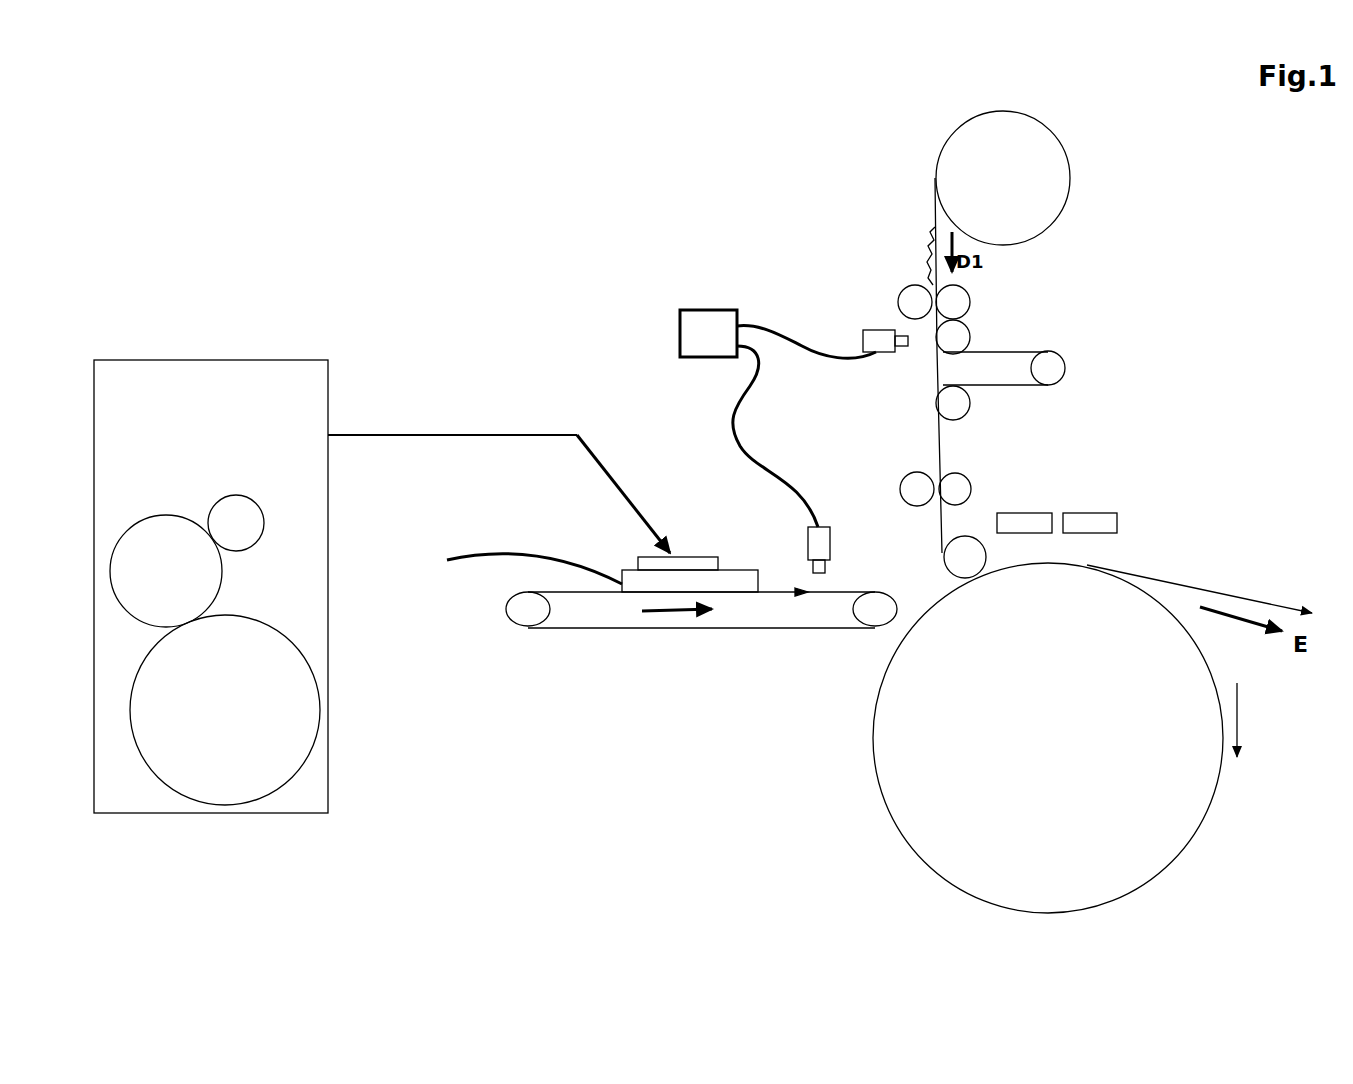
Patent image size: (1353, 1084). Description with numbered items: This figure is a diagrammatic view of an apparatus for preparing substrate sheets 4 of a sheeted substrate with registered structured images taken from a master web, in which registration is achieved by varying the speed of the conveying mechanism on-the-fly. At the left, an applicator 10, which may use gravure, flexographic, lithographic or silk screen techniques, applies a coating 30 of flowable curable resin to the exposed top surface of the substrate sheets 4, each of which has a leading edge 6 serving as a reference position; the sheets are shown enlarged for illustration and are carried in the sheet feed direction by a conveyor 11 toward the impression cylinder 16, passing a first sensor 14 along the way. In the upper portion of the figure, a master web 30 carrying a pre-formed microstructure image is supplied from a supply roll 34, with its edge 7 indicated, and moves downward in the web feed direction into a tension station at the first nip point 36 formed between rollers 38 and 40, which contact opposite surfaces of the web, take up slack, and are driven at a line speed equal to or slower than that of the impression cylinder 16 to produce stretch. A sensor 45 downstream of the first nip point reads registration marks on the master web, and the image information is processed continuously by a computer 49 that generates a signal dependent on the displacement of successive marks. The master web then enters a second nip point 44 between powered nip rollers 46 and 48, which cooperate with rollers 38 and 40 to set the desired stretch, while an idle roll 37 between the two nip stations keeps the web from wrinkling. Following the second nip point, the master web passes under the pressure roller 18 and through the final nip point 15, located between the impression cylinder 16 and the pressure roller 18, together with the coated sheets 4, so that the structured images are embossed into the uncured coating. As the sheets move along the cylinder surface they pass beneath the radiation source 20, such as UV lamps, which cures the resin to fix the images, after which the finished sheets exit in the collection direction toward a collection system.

The applicator 10 is at (250, 360).
The conveyor 11 is at (572, 640).
The substrate sheets 4 is at (624, 574).
The leading edge 6 is at (757, 568).
The master web 30 is at (930, 218).
The supply roll 34 is at (1057, 178).
The web edge 7 is at (922, 238).
The roller 38 is at (893, 285).
The roller 40 is at (972, 297).
The first nip point 36 is at (930, 322).
The idle roll 37 is at (1074, 363).
The second nip point 44 is at (949, 461).
The sensor 45 is at (860, 340).
The computer 49 is at (697, 318).
The first sensor 14 is at (805, 525).
The nip roller 46 is at (893, 483).
The nip roller 48 is at (977, 483).
The nip point 15 is at (946, 585).
The radiation source 20 is at (1033, 522).
The pressure roller 18 is at (967, 560).
The impression cylinder 16 is at (907, 748).